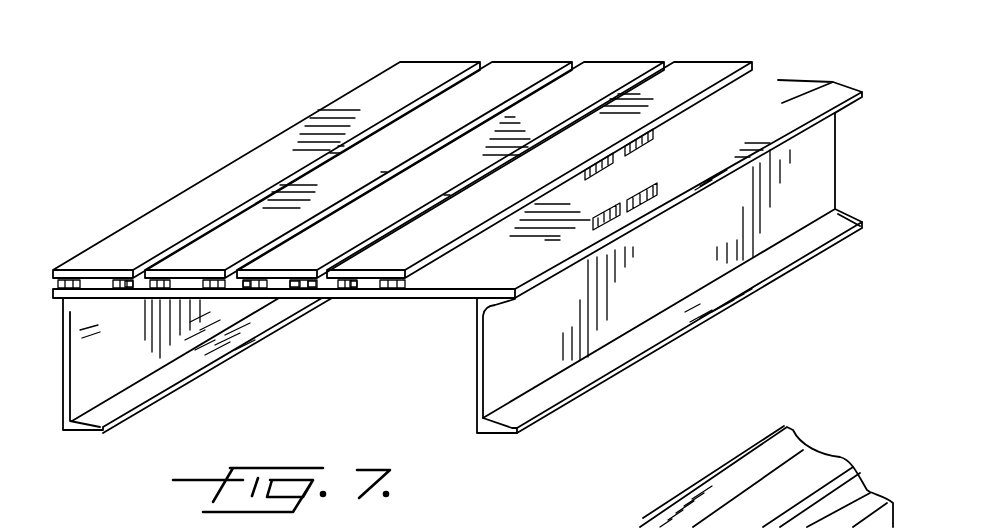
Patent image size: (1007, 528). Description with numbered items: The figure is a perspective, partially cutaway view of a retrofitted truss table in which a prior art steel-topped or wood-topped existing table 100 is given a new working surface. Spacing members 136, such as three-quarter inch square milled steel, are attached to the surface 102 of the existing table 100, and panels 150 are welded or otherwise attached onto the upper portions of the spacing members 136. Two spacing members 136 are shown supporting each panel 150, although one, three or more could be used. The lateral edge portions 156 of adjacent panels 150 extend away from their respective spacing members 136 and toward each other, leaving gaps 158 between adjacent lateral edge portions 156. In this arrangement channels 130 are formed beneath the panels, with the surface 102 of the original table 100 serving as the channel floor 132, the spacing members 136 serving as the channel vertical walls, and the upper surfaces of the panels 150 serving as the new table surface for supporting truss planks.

The existing table 100 is at (728, 227).
The surface 102 is at (752, 97).
The channels 130 is at (143, 281).
The channel floor 132 is at (286, 281).
The spacing members 136 is at (128, 283).
The panels 150 is at (198, 246).
The lateral edge portions 156 is at (250, 213).
The gaps 158 is at (447, 193).